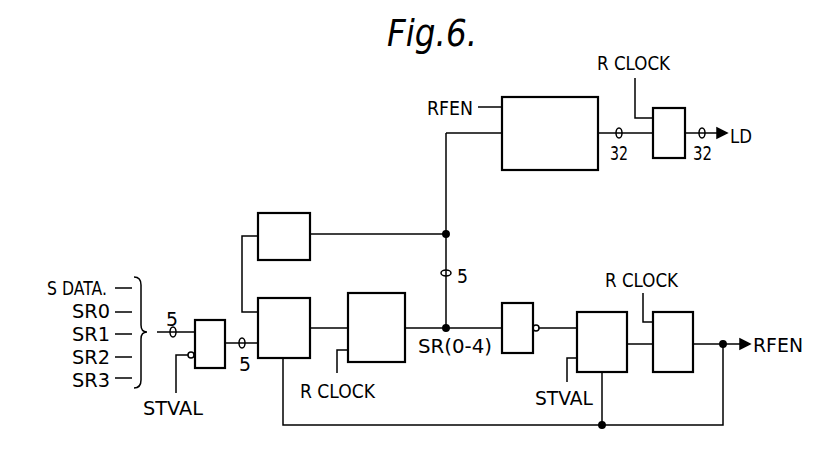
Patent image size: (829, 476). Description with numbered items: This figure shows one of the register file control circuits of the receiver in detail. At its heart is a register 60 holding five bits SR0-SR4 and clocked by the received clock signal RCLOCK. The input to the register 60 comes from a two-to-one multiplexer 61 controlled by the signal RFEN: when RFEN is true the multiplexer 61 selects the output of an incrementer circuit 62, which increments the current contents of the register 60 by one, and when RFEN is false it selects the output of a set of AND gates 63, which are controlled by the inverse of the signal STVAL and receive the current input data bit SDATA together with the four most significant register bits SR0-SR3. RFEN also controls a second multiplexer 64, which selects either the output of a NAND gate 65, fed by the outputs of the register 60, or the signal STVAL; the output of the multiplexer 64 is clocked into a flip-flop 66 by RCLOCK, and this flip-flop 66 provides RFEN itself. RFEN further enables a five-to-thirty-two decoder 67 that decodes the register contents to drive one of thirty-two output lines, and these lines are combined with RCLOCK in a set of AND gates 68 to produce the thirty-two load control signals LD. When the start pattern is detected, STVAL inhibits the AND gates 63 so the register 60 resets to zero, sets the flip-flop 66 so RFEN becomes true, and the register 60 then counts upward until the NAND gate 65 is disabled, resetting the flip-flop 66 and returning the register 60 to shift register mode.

The register 60 is at (378, 298).
The 2:1 multiplexer 61 is at (294, 305).
The incrementer circuit 62 is at (283, 213).
The set of AND gates 63 is at (212, 320).
The multiplexer 64 is at (592, 318).
The NAND gate 65 is at (521, 305).
The flip-flop 66 is at (665, 365).
The 5:32 decoder 67 is at (545, 160).
The set of AND gates 68 is at (666, 155).